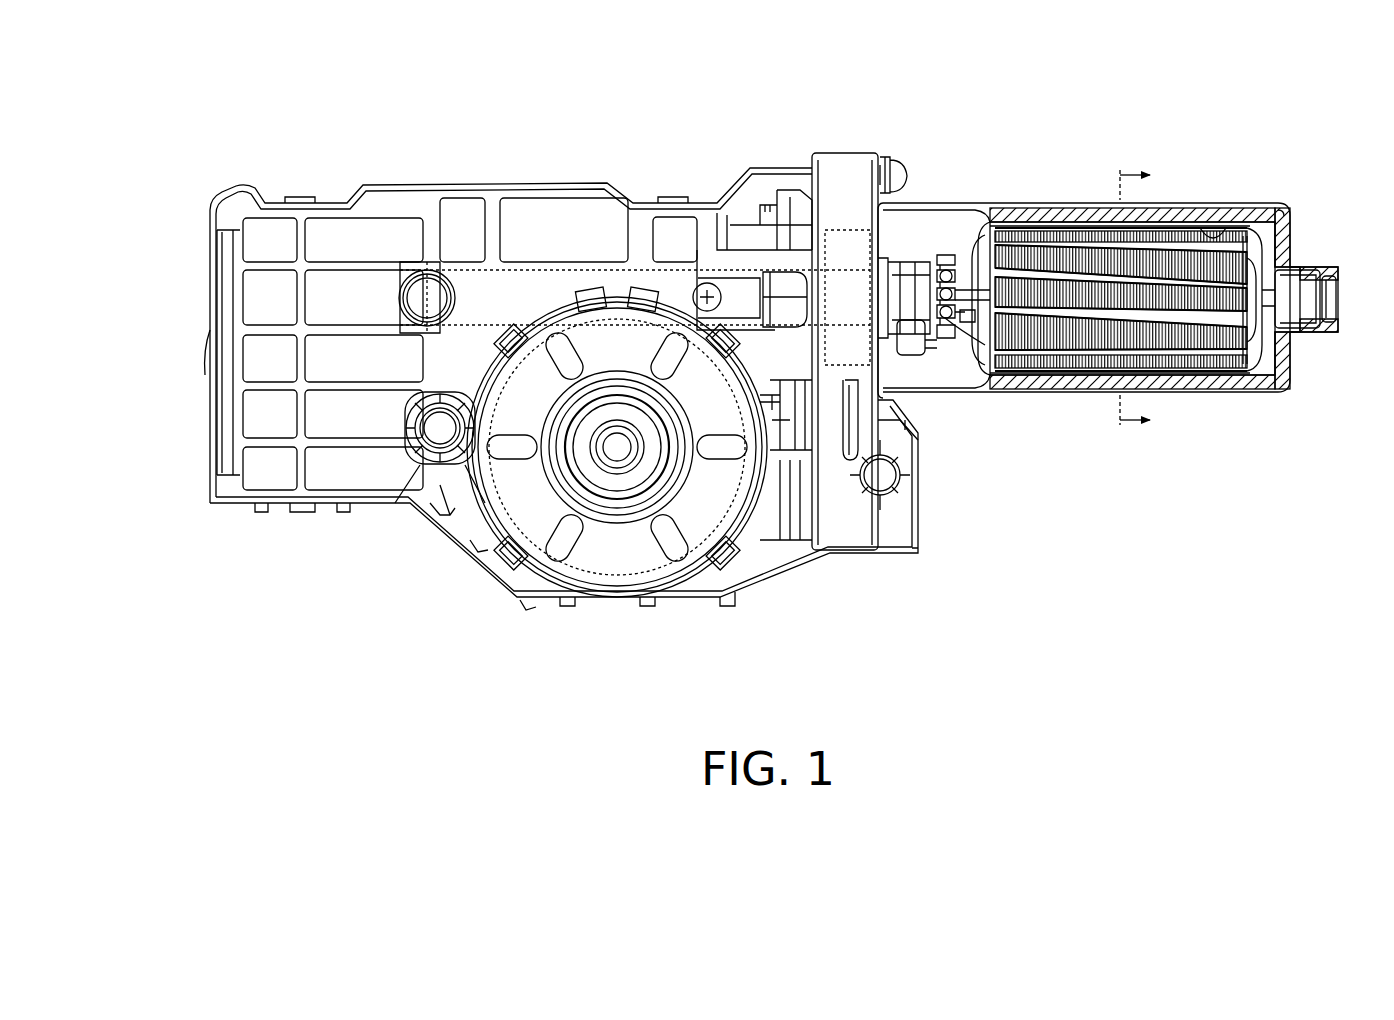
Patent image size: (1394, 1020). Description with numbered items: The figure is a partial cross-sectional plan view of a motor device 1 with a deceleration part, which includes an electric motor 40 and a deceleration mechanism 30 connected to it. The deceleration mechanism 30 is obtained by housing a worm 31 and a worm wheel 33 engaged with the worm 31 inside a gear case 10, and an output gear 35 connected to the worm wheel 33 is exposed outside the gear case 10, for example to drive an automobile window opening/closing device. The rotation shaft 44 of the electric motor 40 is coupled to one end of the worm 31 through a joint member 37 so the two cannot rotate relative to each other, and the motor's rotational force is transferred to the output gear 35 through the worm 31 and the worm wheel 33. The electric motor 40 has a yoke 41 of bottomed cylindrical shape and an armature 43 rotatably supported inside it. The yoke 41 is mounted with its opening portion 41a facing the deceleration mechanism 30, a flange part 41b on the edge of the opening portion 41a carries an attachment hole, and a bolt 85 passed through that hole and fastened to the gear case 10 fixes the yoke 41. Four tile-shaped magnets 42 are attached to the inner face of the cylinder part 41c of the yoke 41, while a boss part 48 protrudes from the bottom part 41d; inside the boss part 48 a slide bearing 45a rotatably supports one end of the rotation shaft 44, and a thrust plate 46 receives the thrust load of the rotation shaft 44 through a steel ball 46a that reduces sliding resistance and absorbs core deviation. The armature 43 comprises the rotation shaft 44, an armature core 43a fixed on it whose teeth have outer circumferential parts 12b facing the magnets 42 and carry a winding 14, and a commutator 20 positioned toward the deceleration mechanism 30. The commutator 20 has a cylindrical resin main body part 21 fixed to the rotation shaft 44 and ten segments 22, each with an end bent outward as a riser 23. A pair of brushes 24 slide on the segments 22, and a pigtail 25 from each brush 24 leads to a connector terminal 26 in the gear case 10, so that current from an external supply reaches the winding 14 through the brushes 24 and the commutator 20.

The motor device with a deceleration part 1 is at (952, 86).
The gear case 10 is at (206, 356).
The outer circumferential part 12b is at (1248, 330).
The winding 14 is at (955, 315).
The commutator 20 is at (889, 248).
The main body part 21 is at (946, 345).
The segments 22 is at (915, 268).
The riser 23 is at (946, 255).
The brushes 24 is at (852, 455).
The pigtail 25 is at (923, 356).
The connector terminal 26 is at (770, 222).
The deceleration mechanism 30 is at (430, 150).
The worm 31 is at (468, 262).
The worm wheel 33 is at (527, 537).
The output gear 35 is at (614, 478).
The joint member 37 is at (838, 230).
The electric motor 40 is at (1044, 187).
The yoke 41 is at (1081, 392).
The opening portion 41a is at (873, 490).
The flange part 41b is at (882, 160).
The cylinder part 41c is at (1213, 236).
The bottom part 41d is at (1286, 216).
The magnets 42 is at (1068, 214).
The armature 43 is at (1254, 240).
The armature core 43a is at (1253, 262).
The rotation shaft 44 is at (968, 295).
The slide bearing 45a is at (1298, 332).
The thrust plate 46 is at (1322, 302).
The steel ball 46a is at (1313, 320).
The boss part 48 is at (1334, 300).
The bolt 85 is at (897, 168).